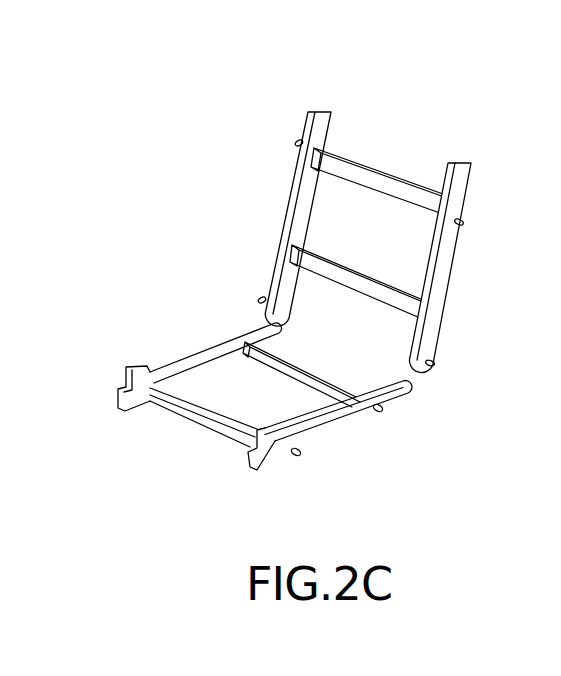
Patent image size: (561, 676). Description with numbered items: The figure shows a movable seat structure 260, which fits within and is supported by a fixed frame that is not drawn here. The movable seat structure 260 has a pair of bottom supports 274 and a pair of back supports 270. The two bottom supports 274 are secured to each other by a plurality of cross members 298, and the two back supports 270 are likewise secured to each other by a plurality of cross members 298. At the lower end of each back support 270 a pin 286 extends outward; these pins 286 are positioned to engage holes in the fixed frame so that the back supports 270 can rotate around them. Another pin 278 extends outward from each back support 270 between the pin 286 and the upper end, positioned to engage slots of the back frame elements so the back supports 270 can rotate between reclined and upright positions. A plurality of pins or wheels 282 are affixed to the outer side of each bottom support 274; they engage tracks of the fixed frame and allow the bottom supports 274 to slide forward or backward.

The movable seat structure 260 is at (228, 95).
The back support 270 is at (319, 127).
The bottom support 274 is at (207, 352).
The pin 278 is at (296, 142).
The pins or wheels 282 is at (384, 410).
The pin 286 is at (259, 299).
The cross member 298 is at (378, 176).